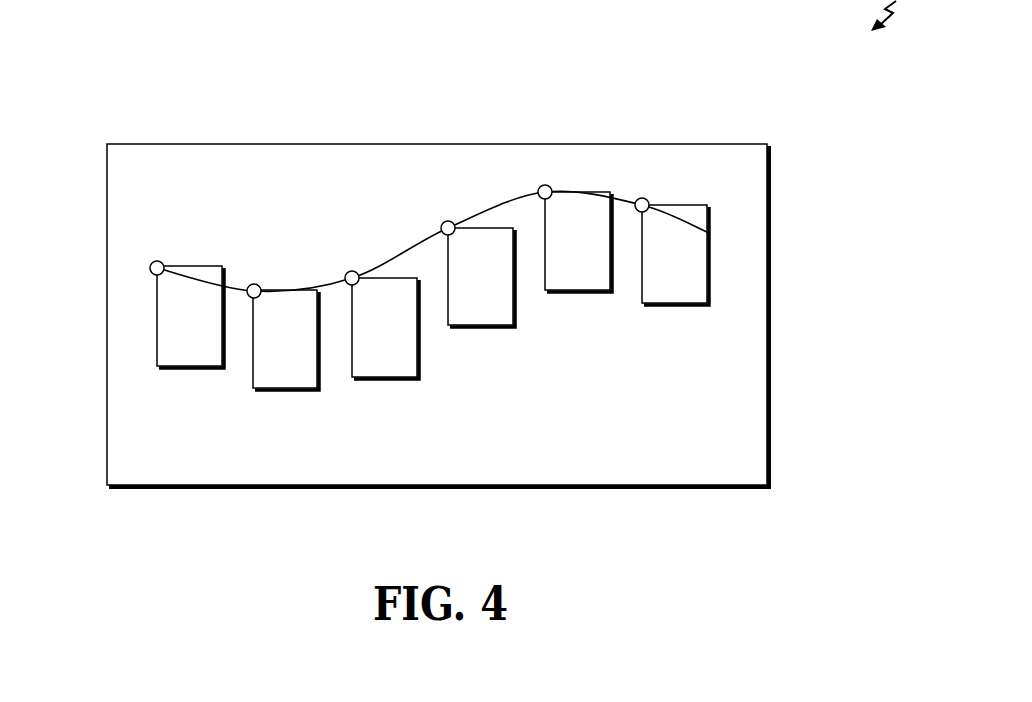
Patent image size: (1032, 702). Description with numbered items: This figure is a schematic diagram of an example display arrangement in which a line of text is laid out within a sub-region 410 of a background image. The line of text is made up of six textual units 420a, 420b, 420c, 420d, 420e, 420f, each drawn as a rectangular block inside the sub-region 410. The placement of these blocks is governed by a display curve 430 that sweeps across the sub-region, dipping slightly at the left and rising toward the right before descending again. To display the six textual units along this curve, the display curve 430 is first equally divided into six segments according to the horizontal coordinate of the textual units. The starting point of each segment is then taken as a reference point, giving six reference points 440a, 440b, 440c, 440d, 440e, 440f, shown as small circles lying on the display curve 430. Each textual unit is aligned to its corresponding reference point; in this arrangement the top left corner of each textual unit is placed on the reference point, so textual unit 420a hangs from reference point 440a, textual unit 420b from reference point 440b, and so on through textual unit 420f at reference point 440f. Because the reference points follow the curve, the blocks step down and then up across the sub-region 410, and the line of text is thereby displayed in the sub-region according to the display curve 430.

The sub-region 410 is at (118, 432).
The textual unit 420a is at (188, 380).
The textual unit 420b is at (295, 380).
The textual unit 420c is at (392, 360).
The textual unit 420d is at (488, 305).
The textual unit 420e is at (582, 278).
The textual unit 420f is at (673, 288).
The display curve 430 is at (522, 197).
The reference point 440a is at (157, 261).
The reference point 440b is at (254, 284).
The reference point 440c is at (352, 271).
The reference point 440d is at (448, 221).
The reference point 440e is at (545, 185).
The reference point 440f is at (642, 198).